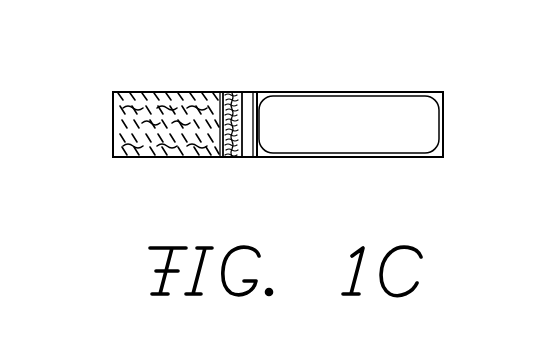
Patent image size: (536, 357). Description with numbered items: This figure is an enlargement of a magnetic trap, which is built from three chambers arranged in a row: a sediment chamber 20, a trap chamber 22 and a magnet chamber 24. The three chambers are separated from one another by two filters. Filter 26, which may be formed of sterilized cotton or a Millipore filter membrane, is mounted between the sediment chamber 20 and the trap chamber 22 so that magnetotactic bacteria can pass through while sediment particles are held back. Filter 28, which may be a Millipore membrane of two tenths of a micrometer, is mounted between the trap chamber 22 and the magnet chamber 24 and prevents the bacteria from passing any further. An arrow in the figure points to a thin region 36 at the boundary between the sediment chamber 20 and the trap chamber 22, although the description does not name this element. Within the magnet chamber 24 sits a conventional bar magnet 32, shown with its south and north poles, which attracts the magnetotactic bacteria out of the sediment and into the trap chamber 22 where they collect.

The sediment chamber 20 is at (125, 92).
The trap chamber 22 is at (231, 158).
The magnet chamber 24 is at (408, 155).
The filter 26 is at (222, 158).
The filter 28 is at (257, 158).
The bar magnet 32 is at (408, 94).
The magnetoresistive layer 36 is at (233, 92).